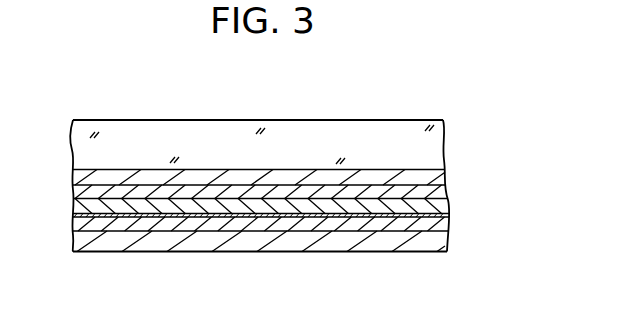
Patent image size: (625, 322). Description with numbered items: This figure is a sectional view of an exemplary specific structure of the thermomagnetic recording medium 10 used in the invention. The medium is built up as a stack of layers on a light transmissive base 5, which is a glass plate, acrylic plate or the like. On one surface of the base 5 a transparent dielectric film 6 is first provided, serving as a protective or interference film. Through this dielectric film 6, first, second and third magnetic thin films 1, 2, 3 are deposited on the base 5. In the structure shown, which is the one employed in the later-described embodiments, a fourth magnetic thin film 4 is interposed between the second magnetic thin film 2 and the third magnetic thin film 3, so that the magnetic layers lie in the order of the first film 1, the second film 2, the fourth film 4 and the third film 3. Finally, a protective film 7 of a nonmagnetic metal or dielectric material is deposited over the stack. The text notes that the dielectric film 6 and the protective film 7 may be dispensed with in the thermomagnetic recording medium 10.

The thermomagnetic recording medium 10 is at (128, 104).
The light transmissive base 5 is at (389, 125).
The transparent dielectric film 6 is at (435, 172).
The first magnetic thin film 1 is at (438, 190).
The second magnetic thin film 2 is at (441, 203).
The fourth magnetic thin film 4 is at (447, 214).
The third magnetic thin film 3 is at (445, 223).
The protective film 7 is at (440, 238).